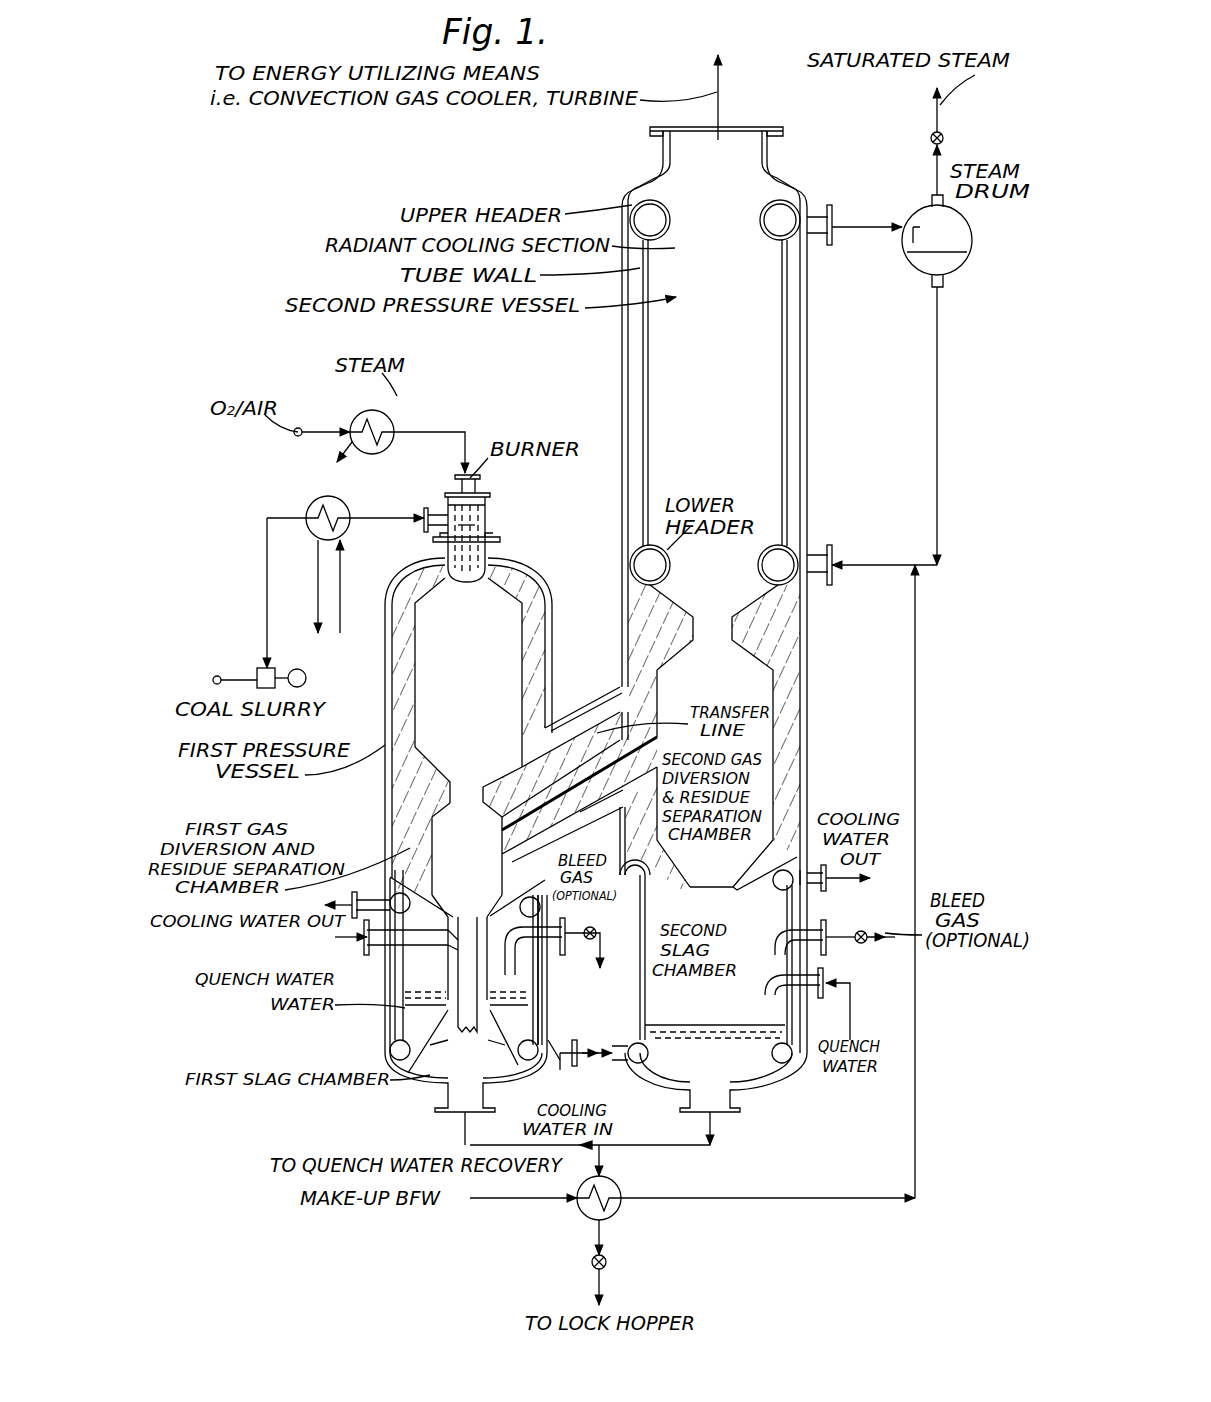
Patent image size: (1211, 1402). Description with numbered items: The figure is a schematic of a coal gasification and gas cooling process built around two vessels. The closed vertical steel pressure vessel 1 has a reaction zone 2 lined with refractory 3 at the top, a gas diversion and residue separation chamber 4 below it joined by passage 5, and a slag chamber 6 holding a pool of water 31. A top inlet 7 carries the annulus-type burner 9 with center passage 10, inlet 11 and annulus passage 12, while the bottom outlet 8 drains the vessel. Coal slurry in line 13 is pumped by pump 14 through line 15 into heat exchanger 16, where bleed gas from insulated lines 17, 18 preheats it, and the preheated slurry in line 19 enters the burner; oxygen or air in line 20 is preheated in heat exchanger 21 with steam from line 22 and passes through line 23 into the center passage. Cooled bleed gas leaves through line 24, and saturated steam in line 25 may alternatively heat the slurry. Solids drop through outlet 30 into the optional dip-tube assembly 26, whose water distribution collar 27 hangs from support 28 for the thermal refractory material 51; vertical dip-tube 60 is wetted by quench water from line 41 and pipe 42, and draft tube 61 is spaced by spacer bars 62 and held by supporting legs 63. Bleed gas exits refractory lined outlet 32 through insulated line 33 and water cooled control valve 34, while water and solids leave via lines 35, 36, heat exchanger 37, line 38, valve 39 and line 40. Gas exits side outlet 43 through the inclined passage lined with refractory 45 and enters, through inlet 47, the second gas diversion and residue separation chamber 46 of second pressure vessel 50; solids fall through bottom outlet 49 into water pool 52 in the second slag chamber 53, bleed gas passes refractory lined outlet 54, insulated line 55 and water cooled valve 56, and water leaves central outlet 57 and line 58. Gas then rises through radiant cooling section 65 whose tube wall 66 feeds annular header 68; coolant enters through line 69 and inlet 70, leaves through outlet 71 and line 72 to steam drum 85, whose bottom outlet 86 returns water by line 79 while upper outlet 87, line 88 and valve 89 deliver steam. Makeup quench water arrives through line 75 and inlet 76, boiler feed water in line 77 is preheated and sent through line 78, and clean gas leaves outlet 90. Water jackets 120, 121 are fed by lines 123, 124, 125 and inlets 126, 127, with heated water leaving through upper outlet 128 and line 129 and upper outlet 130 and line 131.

The pressure vessel 1 is at (385, 655).
The reaction zone 2 is at (445, 662).
The refractory 3 is at (522, 612).
The gas diversion and residue separation chamber 4 is at (467, 849).
The passage 5 is at (459, 790).
The slag chamber 6 is at (542, 1010).
The top inlet 7 is at (500, 540).
The bottom outlet 8 is at (445, 1100).
The annulus-type burner 9 is at (483, 507).
The center passage 10 is at (462, 480).
The inlet 11 is at (430, 508).
The annulus passage 12 is at (485, 522).
The line 13 is at (217, 674).
The pump 14 is at (270, 668).
The line 15 is at (267, 548).
The heat exchanger 16 is at (312, 504).
The insulated line 17 is at (340, 565).
The insulated line 18 is at (868, 945).
The line 19 is at (366, 515).
The line 20 is at (318, 428).
The heat exchanger 21 is at (348, 442).
The line 22 is at (396, 412).
The line 23 is at (446, 430).
The line 24 is at (318, 563).
The line 25 is at (934, 113).
The dip-tube assembly 26 is at (458, 962).
The water distribution collar 27 is at (482, 906).
The support 28 is at (396, 870).
The outlet 30 is at (456, 906).
The water 31 is at (440, 1076).
The refractory lined outlet 32 is at (507, 946).
The insulated line 33 is at (580, 952).
The water cooled control valve 34 is at (582, 928).
The line 35 is at (465, 1118).
The line 36 is at (601, 1178).
The heat exchanger 37 is at (615, 1190).
The line 38 is at (600, 1219).
The valve 39 is at (592, 1263).
The line 40 is at (600, 1287).
The line 41 is at (345, 946).
The pipe 42 is at (365, 945).
The side outlet 43 is at (492, 838).
The refractory 45 is at (562, 778).
The second gas diversion and residue separation chamber 46 is at (792, 762).
The inlet 47 is at (657, 760).
The bottom outlet 49 is at (702, 892).
The second pressure vessel 50 is at (808, 392).
The thermal refractory material 51 is at (400, 782).
The water pool 52 is at (715, 1043).
The second slag chamber 53 is at (716, 1044).
The refractory lined outlet 54 is at (800, 935).
The insulated line 55 is at (846, 935).
The water cooled valve 56 is at (868, 936).
The central outlet 57 is at (690, 1096).
The line 58 is at (690, 1146).
The dip-tube 60 is at (455, 976).
The draft tube 61 is at (531, 1010).
The spacer bars 62 is at (450, 1010).
The supporting legs 63 is at (472, 1046).
The radiant cooling section 65 is at (715, 393).
The tube wall 66 is at (808, 337).
The annular header 68 is at (778, 202).
The line 69 is at (858, 563).
The inlet 70 is at (819, 549).
The outlet 71 is at (821, 214).
The line 72 is at (874, 236).
The line 75 is at (851, 1006).
The inlet 76 is at (806, 975).
The line 77 is at (474, 1201).
The line 78 is at (921, 620).
The line 79 is at (921, 567).
The steam drum 85 is at (972, 247).
The bottom outlet 86 is at (945, 283).
The upper outlet 87 is at (928, 198).
The line 88 is at (948, 150).
The valve 89 is at (941, 133).
The outlet 90 is at (770, 158).
The water jacket 120 is at (398, 1050).
The water jacket 121 is at (805, 1065).
The line 123 is at (560, 1070).
The line 124 is at (562, 1070).
The line 125 is at (580, 1050).
The inlet 126 is at (563, 1045).
The inlet 127 is at (614, 1064).
The upper outlet 128 is at (333, 937).
The line 129 is at (330, 903).
The upper outlet 130 is at (808, 873).
The line 131 is at (873, 876).